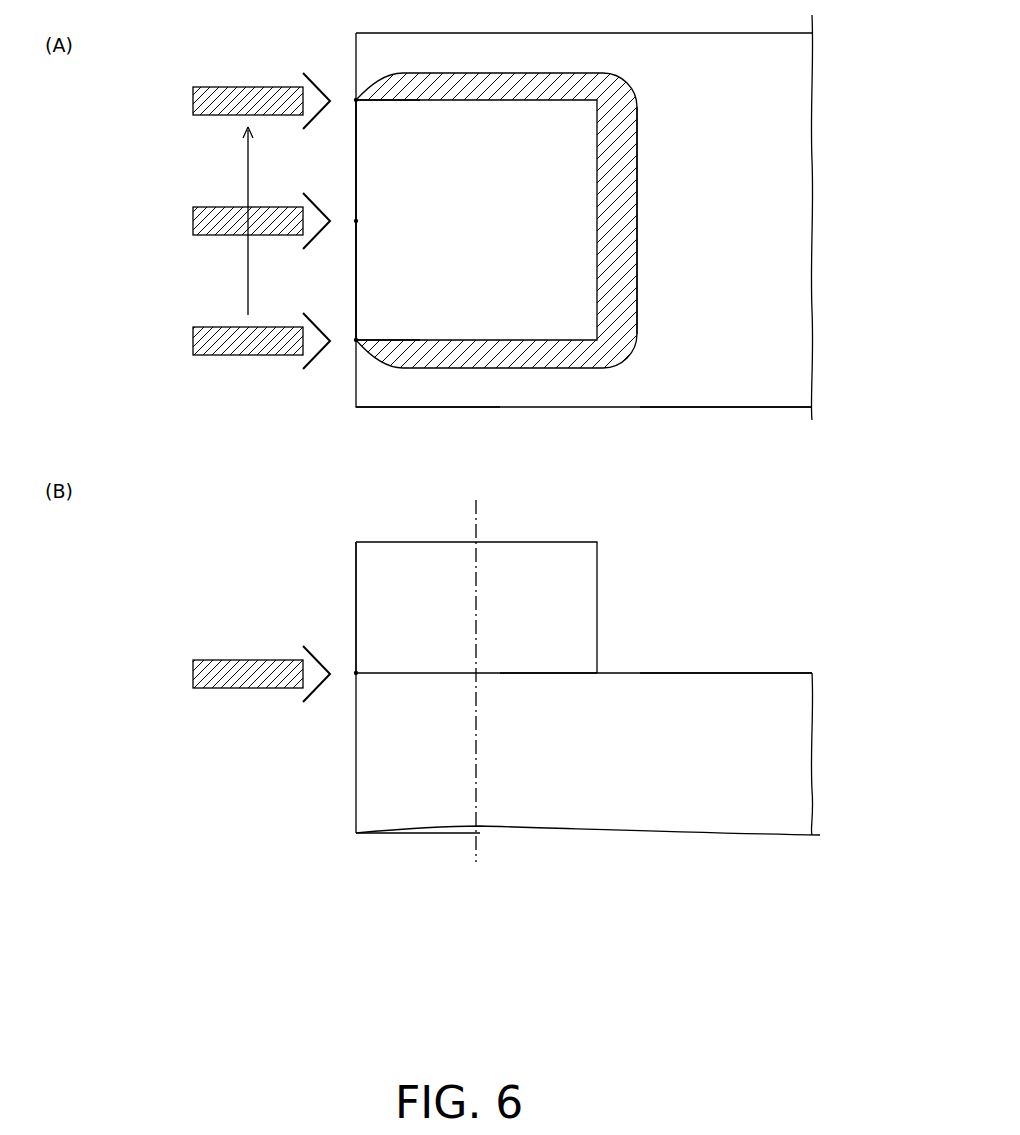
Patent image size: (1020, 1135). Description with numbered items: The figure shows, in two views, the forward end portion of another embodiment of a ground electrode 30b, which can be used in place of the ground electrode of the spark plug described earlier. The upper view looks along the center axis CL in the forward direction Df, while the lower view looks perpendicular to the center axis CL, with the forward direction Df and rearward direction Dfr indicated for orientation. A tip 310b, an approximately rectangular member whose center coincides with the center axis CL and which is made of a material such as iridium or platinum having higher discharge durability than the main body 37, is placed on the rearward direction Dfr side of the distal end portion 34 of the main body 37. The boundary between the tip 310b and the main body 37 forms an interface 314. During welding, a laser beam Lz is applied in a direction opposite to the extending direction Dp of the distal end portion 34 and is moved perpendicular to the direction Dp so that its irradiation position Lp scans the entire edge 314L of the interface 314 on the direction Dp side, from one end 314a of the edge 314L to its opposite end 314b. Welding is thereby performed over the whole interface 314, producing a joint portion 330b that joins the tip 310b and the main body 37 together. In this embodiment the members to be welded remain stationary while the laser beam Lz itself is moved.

The ground electrode 30b is at (750, 434).
The tip 310b is at (517, 290).
The joint portion 330b is at (624, 328).
The interface 314 is at (540, 672).
The one end of the edge 314a is at (356, 340).
The opposite end of the edge 314b is at (356, 100).
The edge of the interface 314L is at (356, 262).
The distal end portion 34 is at (422, 407).
The main body 37 is at (800, 88).
The center axis CL is at (475, 220).
The laser beam Lz is at (193, 101).
The irradiation position Lp is at (356, 100).
The forward direction Df is at (114, 91).
The extending direction Dp is at (113, 87).
The rearward direction Dfr is at (120, 566).